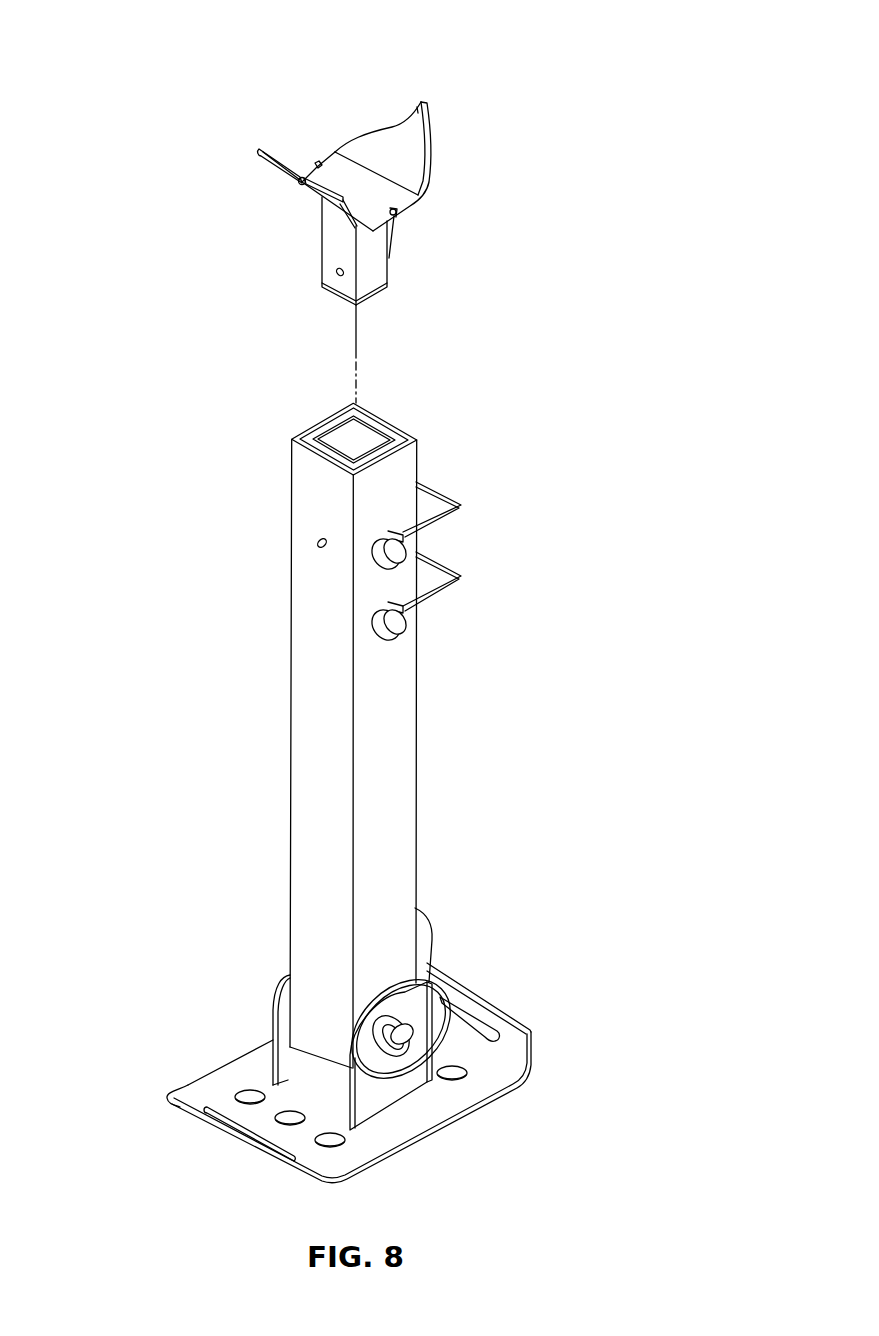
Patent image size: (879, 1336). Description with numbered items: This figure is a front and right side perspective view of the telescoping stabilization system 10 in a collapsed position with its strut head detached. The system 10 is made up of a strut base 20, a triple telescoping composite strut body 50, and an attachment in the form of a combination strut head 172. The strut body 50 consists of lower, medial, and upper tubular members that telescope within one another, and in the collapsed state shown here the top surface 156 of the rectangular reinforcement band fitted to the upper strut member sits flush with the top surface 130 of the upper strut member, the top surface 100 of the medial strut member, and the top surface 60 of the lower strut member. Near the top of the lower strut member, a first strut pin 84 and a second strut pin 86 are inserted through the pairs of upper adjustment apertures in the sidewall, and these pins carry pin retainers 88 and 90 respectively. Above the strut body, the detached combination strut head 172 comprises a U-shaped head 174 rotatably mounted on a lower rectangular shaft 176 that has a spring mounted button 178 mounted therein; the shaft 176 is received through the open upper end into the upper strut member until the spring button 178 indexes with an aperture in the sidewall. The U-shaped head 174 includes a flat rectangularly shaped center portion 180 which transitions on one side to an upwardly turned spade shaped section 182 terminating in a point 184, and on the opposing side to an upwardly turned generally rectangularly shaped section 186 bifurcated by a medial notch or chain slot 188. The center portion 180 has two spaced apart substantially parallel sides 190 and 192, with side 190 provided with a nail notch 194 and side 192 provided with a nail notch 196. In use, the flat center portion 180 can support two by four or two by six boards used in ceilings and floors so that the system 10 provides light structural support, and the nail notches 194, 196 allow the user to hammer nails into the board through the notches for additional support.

The telescoping stabilization system 10 is at (118, 45).
The strut base 20 is at (217, 1042).
The triple telescoping composite strut body 50 is at (442, 813).
The top surface 60 is at (338, 462).
The first strut pin 84 is at (400, 627).
The second strut pin 86 is at (400, 553).
The pin retainer 88 is at (447, 562).
The pin retainer 90 is at (427, 483).
The top surface 100 is at (320, 450).
The top surface 130 is at (343, 422).
The top surface 156 is at (313, 440).
The combination strut head 172 is at (255, 140).
The U-shaped head 174 is at (432, 207).
The lower rectangular shaft 176 is at (293, 253).
The spring mounted button 178 is at (338, 275).
The flat rectangularly shaped center portion 180 is at (383, 192).
The upwardly turned spade shaped section 182 is at (373, 143).
The point 184 is at (417, 100).
The upwardly turned generally rectangularly shaped section 186 is at (267, 163).
The medial notch or chain slot 188 is at (300, 188).
The side 190 is at (388, 266).
The side 192 is at (328, 157).
The nail notch 194 is at (395, 213).
The nail notch 196 is at (317, 163).